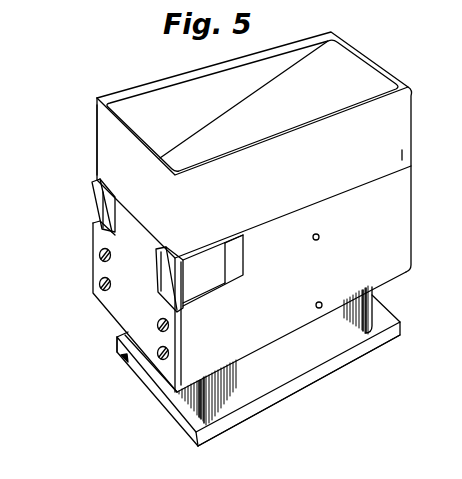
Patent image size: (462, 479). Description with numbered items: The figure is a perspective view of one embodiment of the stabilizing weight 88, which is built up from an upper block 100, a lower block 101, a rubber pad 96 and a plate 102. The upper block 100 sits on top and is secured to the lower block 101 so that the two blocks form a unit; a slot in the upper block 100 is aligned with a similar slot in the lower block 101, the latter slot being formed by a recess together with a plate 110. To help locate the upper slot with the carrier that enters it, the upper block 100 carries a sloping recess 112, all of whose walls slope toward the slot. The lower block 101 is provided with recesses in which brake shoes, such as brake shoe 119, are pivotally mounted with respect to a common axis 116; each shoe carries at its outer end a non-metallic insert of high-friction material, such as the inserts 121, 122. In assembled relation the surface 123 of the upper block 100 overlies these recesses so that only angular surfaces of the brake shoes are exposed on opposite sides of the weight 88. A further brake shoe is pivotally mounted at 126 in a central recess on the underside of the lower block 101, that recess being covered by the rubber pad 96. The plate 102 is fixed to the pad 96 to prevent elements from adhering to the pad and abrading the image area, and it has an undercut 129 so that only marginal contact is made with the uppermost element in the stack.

The stabilizing weight 88 is at (92, 127).
The rubber pad 96 is at (258, 366).
The upper block 100 is at (276, 212).
The lower block 101 is at (401, 218).
The plate 102 is at (242, 420).
The plate 110 is at (127, 265).
The sloping recess 112 is at (172, 90).
The common axis 116 is at (319, 235).
The brake shoe 119 is at (204, 281).
The non-metallic insert 121 is at (95, 200).
The non-metallic insert 122 is at (165, 283).
The surface 123 is at (391, 170).
The pivot 126 is at (322, 303).
The undercut 129 is at (192, 436).